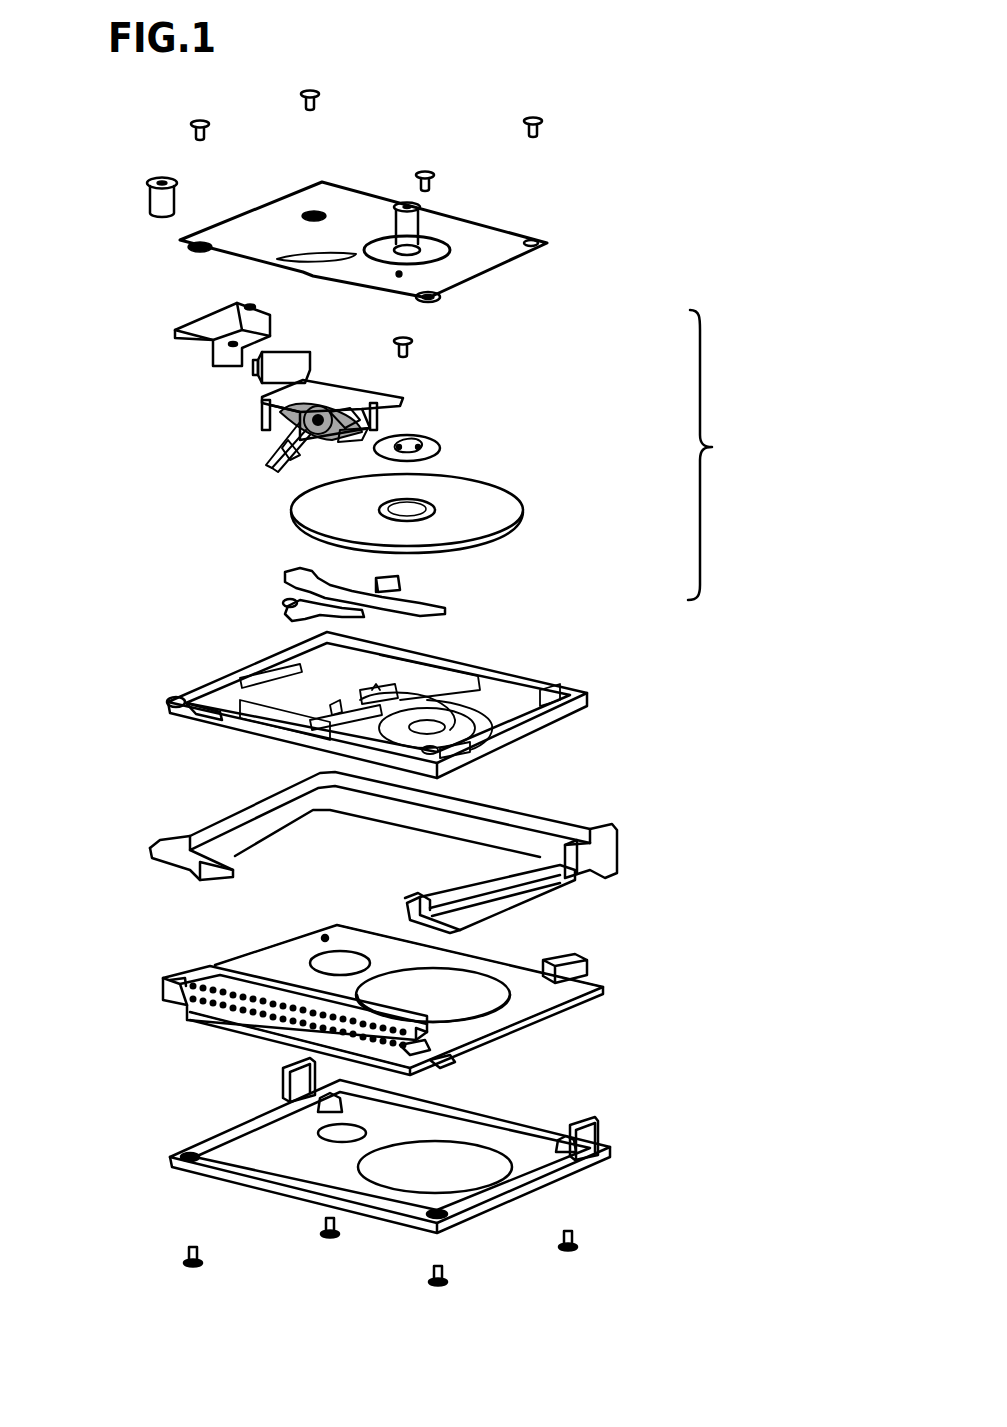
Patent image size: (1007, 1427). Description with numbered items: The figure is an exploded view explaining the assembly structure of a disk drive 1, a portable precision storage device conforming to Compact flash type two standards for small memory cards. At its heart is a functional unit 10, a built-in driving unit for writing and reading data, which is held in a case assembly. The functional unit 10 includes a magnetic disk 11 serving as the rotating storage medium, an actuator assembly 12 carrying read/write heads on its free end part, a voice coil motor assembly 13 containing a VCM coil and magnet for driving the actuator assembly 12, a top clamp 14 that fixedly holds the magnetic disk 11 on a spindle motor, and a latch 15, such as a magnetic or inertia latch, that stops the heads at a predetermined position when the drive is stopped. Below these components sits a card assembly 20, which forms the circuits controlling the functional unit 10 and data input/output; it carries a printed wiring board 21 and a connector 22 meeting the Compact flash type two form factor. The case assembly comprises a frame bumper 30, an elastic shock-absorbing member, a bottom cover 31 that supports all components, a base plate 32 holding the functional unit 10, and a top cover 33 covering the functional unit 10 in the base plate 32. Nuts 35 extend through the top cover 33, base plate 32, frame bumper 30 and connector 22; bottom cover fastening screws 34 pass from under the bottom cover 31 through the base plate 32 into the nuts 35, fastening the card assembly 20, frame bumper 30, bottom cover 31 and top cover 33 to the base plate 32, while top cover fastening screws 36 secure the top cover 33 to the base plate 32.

The disk drive 1 is at (434, 110).
The functional unit 10 is at (788, 455).
The magnetic disk 11 is at (480, 488).
The actuator assembly 12 is at (262, 458).
The voice coil motor assembly 13 is at (394, 388).
The top clamp 14 is at (438, 442).
The latch 15 is at (450, 602).
The card assembly 20 is at (595, 985).
The printed wiring board 21 is at (288, 962).
The connector 22 is at (195, 1026).
The frame bumper 30 is at (555, 830).
The bottom cover 31 is at (518, 1112).
The base plate 32 is at (495, 668).
The top cover 33 is at (505, 228).
The bottom cover fastening screws 34 is at (576, 1242).
The nuts 35 is at (153, 203).
The top cover fastening screws 36 is at (545, 122).